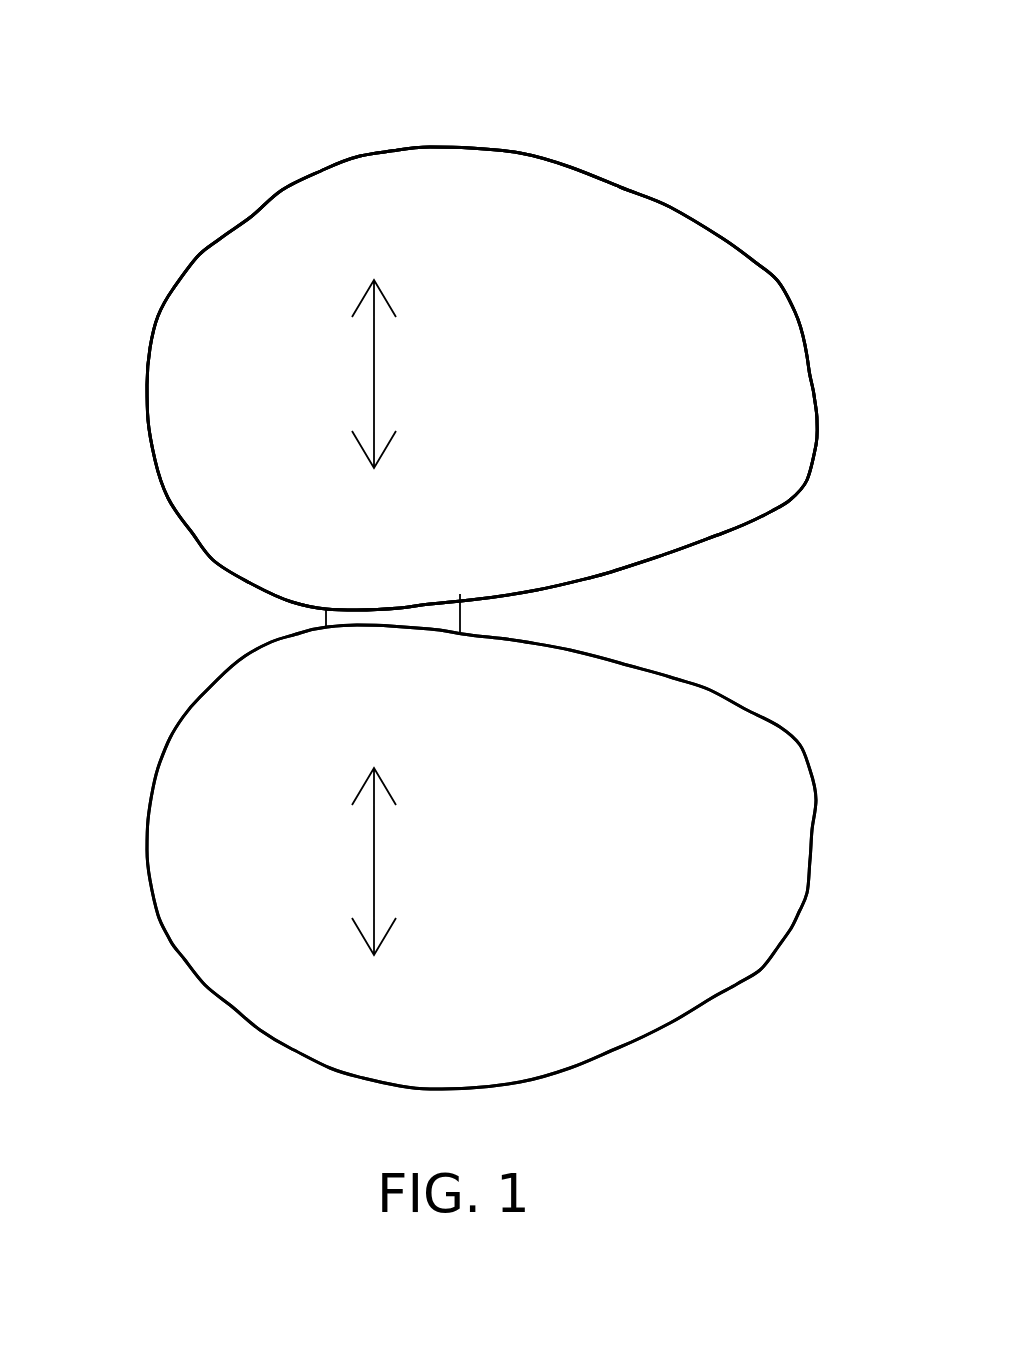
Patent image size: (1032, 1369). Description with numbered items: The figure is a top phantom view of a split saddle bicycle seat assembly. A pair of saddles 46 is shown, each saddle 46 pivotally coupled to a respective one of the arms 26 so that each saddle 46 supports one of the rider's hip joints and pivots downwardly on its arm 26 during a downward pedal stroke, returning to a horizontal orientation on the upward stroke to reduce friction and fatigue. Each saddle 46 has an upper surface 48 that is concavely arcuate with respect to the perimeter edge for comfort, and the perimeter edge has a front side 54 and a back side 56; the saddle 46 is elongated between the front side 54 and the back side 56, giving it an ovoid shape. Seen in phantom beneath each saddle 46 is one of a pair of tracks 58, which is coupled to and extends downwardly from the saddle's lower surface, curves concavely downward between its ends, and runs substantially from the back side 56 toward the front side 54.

The upper surface 48 is at (473, 212).
The track 58 is at (522, 377).
The back side 56 is at (150, 353).
The front side 54 is at (808, 357).
The saddle 46 is at (155, 428).
The arm 26 is at (240, 493).